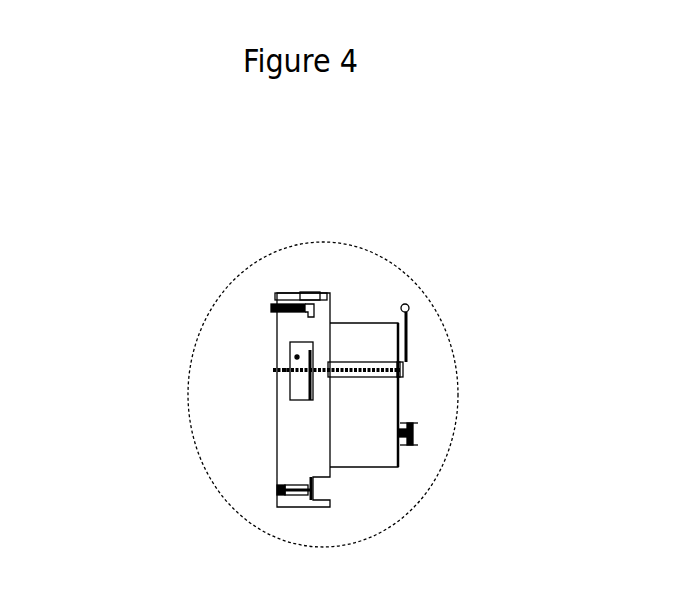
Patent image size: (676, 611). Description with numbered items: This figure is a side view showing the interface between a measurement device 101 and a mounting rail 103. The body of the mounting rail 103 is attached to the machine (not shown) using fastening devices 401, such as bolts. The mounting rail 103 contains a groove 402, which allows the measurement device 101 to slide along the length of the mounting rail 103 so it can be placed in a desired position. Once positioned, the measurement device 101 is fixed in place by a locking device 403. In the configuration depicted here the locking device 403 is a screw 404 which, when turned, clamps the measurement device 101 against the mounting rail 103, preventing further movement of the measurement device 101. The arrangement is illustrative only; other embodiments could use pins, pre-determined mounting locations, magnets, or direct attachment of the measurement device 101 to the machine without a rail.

The measurement device 101 is at (383, 409).
The mounting rail 103 is at (302, 448).
The fastening devices 401 is at (277, 310).
The groove 402 is at (285, 368).
The locking device 403 is at (405, 305).
The screw 404 is at (370, 367).